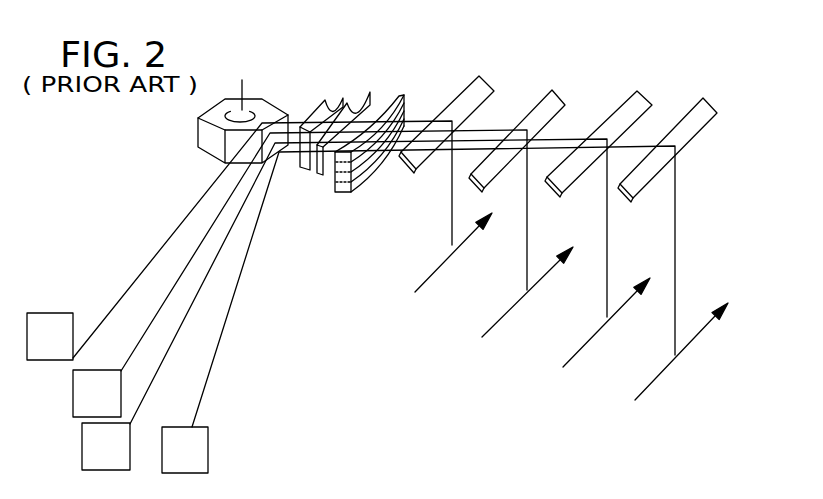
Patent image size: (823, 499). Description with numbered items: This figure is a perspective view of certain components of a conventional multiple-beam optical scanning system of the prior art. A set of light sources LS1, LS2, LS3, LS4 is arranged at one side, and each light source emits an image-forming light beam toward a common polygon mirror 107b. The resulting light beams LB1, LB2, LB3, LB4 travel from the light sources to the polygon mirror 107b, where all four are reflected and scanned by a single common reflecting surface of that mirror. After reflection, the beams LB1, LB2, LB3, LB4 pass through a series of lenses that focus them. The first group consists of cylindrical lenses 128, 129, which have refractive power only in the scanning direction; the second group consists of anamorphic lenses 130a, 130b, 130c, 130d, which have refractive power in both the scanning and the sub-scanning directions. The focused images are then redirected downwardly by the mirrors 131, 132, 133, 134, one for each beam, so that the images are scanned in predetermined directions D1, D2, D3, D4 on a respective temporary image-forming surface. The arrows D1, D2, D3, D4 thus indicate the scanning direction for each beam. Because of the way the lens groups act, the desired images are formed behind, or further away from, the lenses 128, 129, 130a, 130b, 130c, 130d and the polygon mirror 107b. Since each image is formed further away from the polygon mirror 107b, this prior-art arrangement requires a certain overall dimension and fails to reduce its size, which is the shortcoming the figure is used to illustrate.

The polygon mirror 107b is at (288, 99).
The cylindrical lens 128 is at (343, 97).
The cylindrical lens 129 is at (369, 92).
The anamorphic lens 130a is at (396, 96).
The anamorphic lens 130b is at (406, 118).
The anamorphic lens 130c is at (345, 175).
The anamorphic lens 130d is at (338, 190).
The mirror 131 is at (705, 112).
The mirror 132 is at (638, 104).
The mirror 133 is at (558, 102).
The mirror 134 is at (484, 92).
The light source LS1 is at (50, 336).
The light source LS2 is at (97, 393).
The light source LS3 is at (106, 446).
The light source LS4 is at (185, 450).
The light beam LB1 is at (132, 290).
The light beam LB2 is at (188, 268).
The light beam LB3 is at (162, 362).
The light beam LB4 is at (217, 336).
The scanning direction D1 is at (681, 366).
The scanning direction D2 is at (606, 338).
The scanning direction D3 is at (527, 307).
The scanning direction D4 is at (453, 266).